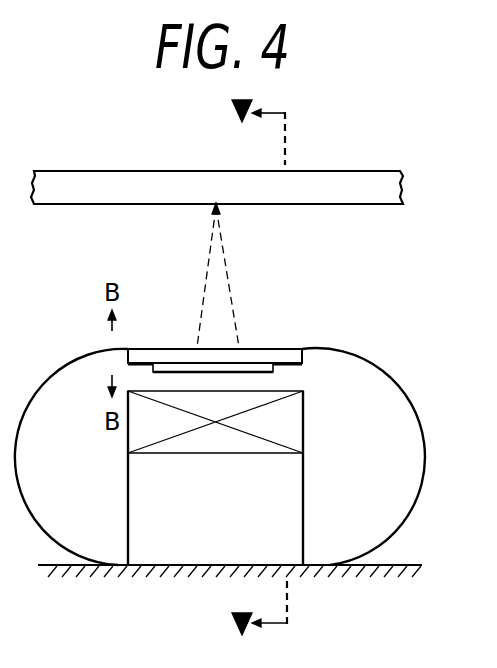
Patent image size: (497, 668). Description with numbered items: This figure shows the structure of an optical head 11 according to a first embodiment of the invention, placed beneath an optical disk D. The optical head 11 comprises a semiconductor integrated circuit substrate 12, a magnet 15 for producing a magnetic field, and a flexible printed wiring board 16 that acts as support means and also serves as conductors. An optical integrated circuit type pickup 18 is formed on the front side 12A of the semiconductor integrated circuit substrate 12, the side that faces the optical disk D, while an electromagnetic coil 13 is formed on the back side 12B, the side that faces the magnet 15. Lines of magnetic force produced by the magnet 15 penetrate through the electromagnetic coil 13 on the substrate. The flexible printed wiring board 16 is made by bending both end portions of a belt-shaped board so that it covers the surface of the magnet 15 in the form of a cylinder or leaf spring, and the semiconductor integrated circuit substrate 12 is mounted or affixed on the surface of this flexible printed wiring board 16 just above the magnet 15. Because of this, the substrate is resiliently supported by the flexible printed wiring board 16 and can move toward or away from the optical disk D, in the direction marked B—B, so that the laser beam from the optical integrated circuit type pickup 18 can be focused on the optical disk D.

The optical disk D is at (322, 182).
The optical head 11 is at (229, 416).
The semiconductor integrated circuit substrate 12 is at (275, 357).
The front side 12A is at (165, 348).
The back side 12B is at (143, 364).
The electromagnetic coil 13 is at (273, 368).
The magnet 15 is at (303, 432).
The flexible printed wiring board 16 is at (367, 341).
The optical integrated circuit type pickup 18 is at (218, 345).